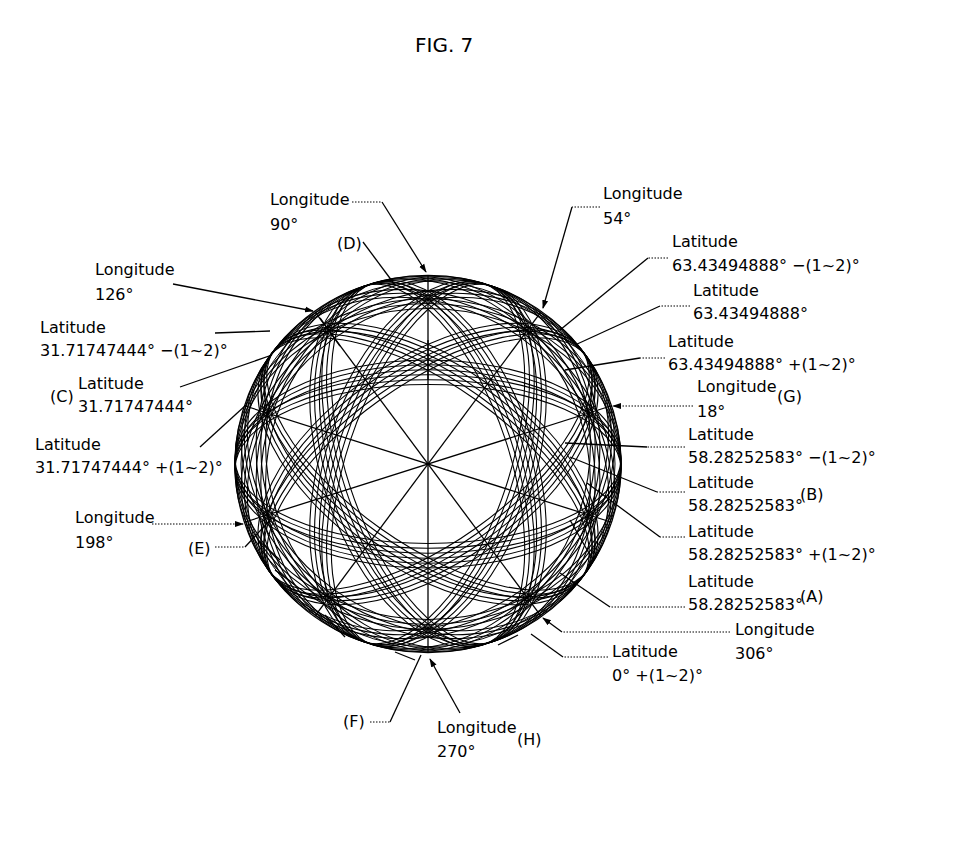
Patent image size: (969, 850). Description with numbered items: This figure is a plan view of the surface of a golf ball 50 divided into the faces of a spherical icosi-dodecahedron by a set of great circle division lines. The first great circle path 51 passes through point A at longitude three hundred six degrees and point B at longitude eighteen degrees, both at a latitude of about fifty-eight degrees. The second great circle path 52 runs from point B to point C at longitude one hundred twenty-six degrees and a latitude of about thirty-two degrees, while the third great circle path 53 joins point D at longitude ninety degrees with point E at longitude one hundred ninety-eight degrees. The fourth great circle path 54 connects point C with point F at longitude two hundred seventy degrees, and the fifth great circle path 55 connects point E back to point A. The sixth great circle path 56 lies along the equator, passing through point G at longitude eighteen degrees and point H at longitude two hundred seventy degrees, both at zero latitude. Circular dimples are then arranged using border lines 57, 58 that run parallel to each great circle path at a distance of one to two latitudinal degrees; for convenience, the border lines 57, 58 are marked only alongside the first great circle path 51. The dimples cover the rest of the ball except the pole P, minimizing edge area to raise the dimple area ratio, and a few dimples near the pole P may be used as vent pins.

The golf ball 50 is at (158, 161).
The first great circle path 51 is at (572, 540).
The second great circle path 52 is at (432, 358).
The third great circle path 53 is at (338, 340).
The fourth great circle path 54 is at (268, 553).
The fifth great circle path 55 is at (339, 627).
The sixth great circle path 56 is at (405, 661).
The border line 57 is at (447, 611).
The border line 58 is at (505, 652).
The pole P is at (284, 578).